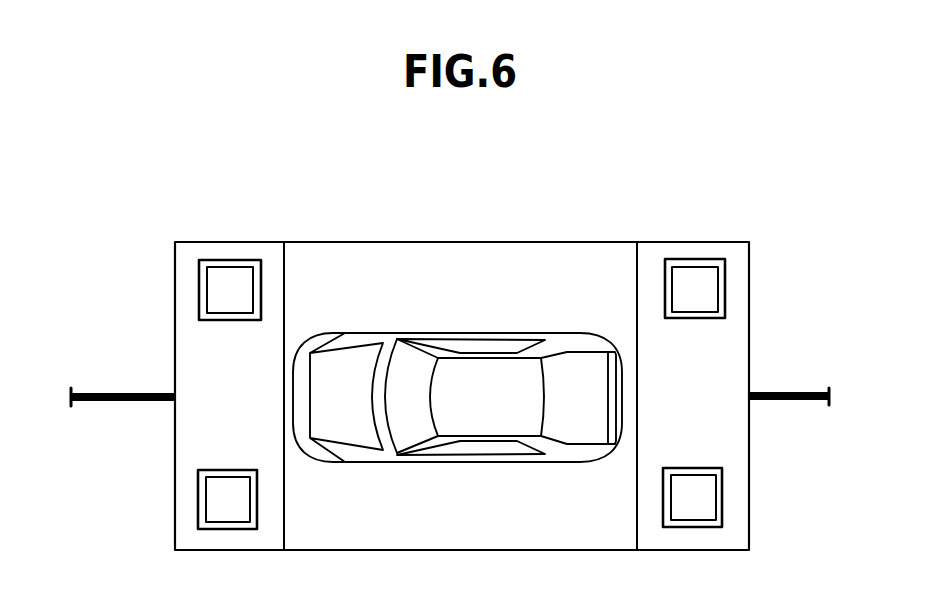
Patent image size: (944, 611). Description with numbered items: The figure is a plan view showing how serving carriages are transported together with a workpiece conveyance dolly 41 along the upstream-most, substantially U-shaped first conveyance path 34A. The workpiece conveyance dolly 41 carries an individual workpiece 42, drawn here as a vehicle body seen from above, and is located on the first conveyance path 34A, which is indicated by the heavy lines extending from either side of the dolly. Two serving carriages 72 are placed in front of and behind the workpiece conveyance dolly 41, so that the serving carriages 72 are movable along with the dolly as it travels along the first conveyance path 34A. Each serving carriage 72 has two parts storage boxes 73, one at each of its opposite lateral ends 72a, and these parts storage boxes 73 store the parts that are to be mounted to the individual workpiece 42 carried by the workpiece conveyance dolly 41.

The workpiece conveyance dolly 41 is at (417, 247).
The workpiece 42 is at (480, 333).
The serving carriage 72 is at (228, 247).
The lateral end 72a is at (178, 267).
The parts storage box 73 is at (205, 303).
The first conveyance path 34A is at (788, 402).